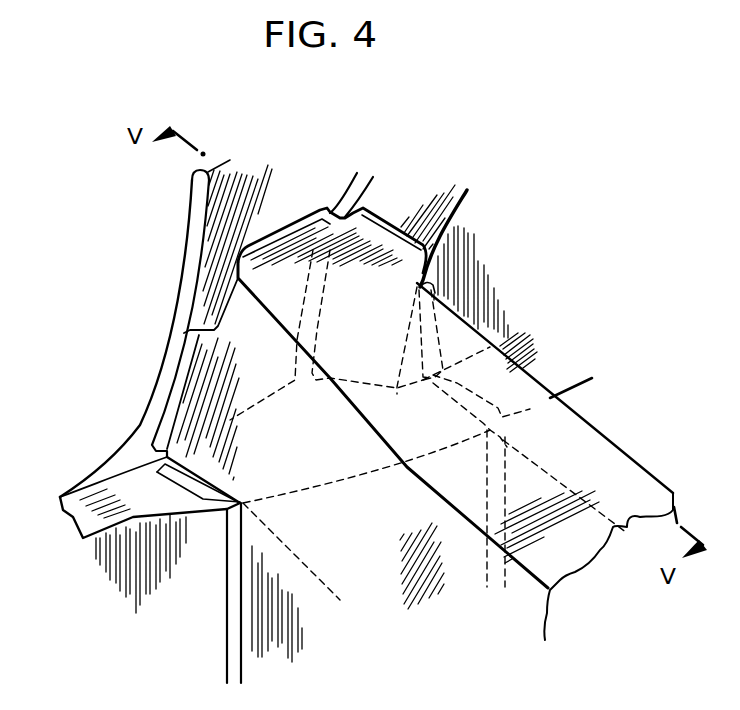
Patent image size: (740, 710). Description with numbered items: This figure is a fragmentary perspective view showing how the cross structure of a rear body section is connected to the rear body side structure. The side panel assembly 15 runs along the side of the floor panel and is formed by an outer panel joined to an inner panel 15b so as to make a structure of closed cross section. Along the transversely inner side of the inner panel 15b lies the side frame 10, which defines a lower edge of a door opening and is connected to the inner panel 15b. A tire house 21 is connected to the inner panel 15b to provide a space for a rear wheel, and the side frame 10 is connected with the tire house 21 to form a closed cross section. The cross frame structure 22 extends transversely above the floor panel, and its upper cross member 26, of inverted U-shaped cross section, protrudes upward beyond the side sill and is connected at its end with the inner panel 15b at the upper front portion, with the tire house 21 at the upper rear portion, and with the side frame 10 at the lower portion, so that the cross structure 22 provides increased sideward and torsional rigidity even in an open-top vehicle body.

The side frame 10 is at (100, 523).
The side panel assembly 15 is at (224, 198).
The inner panel 15b is at (268, 193).
The tire house 21 is at (455, 216).
The cross frame structure 22 is at (470, 322).
The upper cross member 26 is at (587, 432).